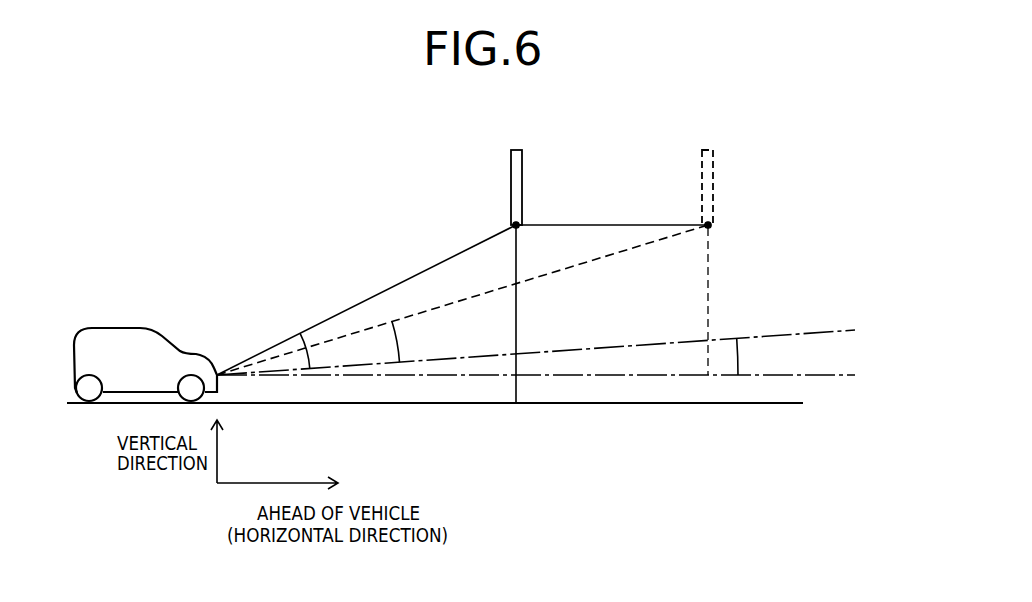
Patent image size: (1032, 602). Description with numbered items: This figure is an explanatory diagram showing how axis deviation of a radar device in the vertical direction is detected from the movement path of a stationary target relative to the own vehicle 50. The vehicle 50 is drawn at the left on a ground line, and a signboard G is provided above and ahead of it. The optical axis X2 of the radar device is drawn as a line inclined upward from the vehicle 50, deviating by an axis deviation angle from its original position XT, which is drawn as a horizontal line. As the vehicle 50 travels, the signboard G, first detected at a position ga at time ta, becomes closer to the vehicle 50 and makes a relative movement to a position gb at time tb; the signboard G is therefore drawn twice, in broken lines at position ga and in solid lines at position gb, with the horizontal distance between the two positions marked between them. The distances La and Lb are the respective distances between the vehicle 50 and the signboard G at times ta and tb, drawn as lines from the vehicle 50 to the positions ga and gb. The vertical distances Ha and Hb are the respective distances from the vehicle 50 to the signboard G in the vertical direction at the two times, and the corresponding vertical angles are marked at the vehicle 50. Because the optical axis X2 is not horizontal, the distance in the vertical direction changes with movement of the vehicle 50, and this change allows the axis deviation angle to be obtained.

The vehicle 50 is at (113, 338).
The signboard G is at (516, 150).
The position at time tb gb is at (513, 222).
The position at time ta ga is at (715, 209).
The distance at time tb Lb is at (366, 300).
The distance at time ta La is at (462, 300).
The vertical distance at time tb Hb is at (536, 314).
The vertical distance at time ta Ha is at (732, 303).
The optical axis X2 is at (551, 348).
The original position XT is at (551, 376).